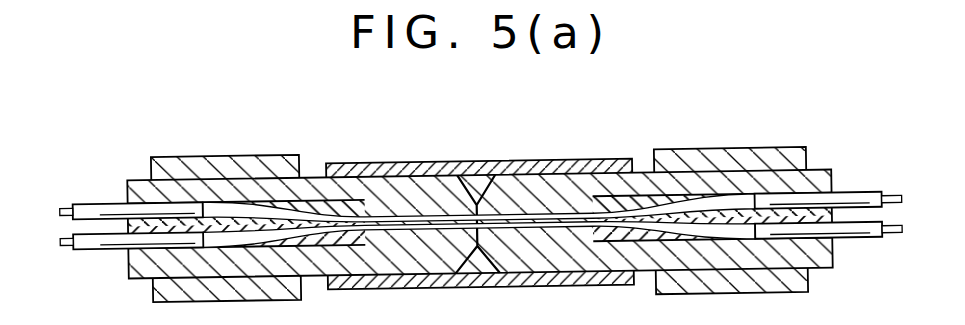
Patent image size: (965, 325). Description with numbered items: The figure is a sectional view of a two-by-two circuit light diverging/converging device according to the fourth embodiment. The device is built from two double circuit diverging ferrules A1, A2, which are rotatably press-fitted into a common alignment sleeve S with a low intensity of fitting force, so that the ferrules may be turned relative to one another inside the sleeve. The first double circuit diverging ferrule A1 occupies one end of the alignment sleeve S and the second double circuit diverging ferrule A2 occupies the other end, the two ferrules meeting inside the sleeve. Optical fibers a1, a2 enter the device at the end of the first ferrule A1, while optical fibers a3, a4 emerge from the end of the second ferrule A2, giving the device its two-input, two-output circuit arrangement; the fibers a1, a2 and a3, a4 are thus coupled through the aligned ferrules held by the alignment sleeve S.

The double circuit diverging ferrule A1 is at (142, 176).
The double circuit diverging ferrule A2 is at (814, 166).
The alignment sleeve S is at (490, 162).
The first optical fiber a1 is at (95, 207).
The second optical fiber a2 is at (95, 250).
The third optical fiber a3 is at (865, 203).
The fourth optical fiber a4 is at (868, 240).